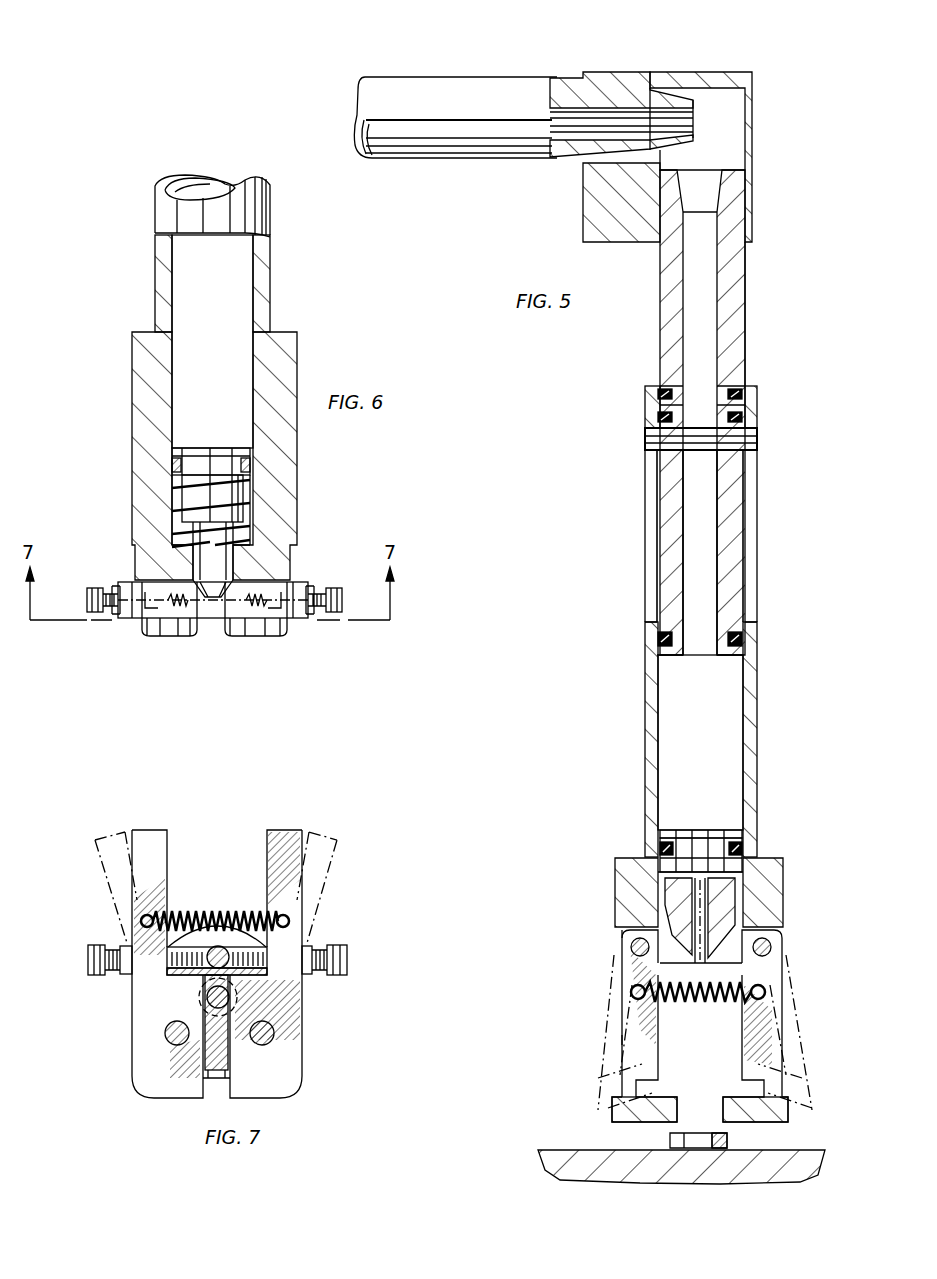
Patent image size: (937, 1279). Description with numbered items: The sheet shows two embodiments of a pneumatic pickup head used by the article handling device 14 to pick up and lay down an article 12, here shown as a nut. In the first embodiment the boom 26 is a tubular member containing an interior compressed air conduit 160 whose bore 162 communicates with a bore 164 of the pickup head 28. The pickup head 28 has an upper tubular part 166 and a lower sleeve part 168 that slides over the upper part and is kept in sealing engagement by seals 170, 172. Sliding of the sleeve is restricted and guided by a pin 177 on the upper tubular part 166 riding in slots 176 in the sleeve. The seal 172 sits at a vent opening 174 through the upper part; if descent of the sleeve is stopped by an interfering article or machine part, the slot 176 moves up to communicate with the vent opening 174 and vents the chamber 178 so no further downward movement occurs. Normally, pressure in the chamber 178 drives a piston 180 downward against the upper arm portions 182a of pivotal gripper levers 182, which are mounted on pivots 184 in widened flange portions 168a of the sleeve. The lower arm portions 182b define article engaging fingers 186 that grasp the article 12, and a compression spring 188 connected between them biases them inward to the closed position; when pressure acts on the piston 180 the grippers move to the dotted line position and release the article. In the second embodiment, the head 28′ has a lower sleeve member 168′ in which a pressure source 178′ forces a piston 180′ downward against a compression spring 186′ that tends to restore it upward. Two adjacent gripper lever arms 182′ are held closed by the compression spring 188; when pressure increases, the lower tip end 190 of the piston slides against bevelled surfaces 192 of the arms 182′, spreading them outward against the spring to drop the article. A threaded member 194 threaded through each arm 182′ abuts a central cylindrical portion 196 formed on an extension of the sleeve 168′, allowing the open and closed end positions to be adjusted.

In FIG. 5, the article 12 is at (735, 1145).
In FIG. 5, the article handling device 14 is at (487, 78).
In FIG. 5, the boom 26 is at (420, 78).
In FIG. 5, the pickup head 28 is at (744, 306).
In FIG. 5, the compressed air conduit 160 is at (650, 72).
In FIG. 5, the bore 162 is at (700, 118).
In FIG. 5, the bore of the pickup member 164 is at (705, 258).
In FIG. 5, the upper tubular part 166 is at (732, 492).
In FIG. 5, the lower sleeve part 168 is at (752, 690).
In FIG. 5, the widened flange portion 168a is at (780, 885).
In FIG. 5, the seal 170 is at (660, 640).
In FIG. 5, the seal 172 is at (757, 390).
In FIG. 5, the vent opening 174 is at (672, 398).
In FIG. 5, the slot 176 is at (645, 503).
In FIG. 5, the pin 177 is at (745, 440).
In FIG. 5, the chamber 178 is at (710, 719).
In FIG. 5, the piston 180 is at (712, 835).
In FIG. 5, the gripper lever 182 is at (626, 975).
In FIG. 5, the upper arm portion 182a is at (620, 884).
In FIG. 5, the lower arm portion 182b is at (620, 1040).
In FIG. 5, the pivot 184 is at (638, 930).
In FIG. 5, the article engaging finger 186 is at (731, 1090).
In FIG. 5, the compression spring 188 is at (722, 1004).
In FIG. 7, the compression spring 188 is at (230, 907).
In FIG. 6, the lower sleeve member 168′ is at (262, 270).
In FIG. 6, the pressure source 178′ is at (222, 349).
In FIG. 6, the pickup head 28′ is at (297, 367).
In FIG. 7, the pickup head 28′ is at (302, 1036).
In FIG. 6, the piston 180′ is at (212, 450).
In FIG. 6, the compression spring 186′ is at (240, 500).
In FIG. 6, the lower tip end 190 is at (238, 578).
In FIG. 7, the lower tip end 190 is at (207, 1000).
In FIG. 6, the bevelled surface 192 is at (230, 586).
In FIG. 7, the gripper lever arm 182′ is at (302, 900).
In FIG. 7, the threaded member 194 is at (346, 956).
In FIG. 7, the central cylindrical portion 196 is at (218, 946).